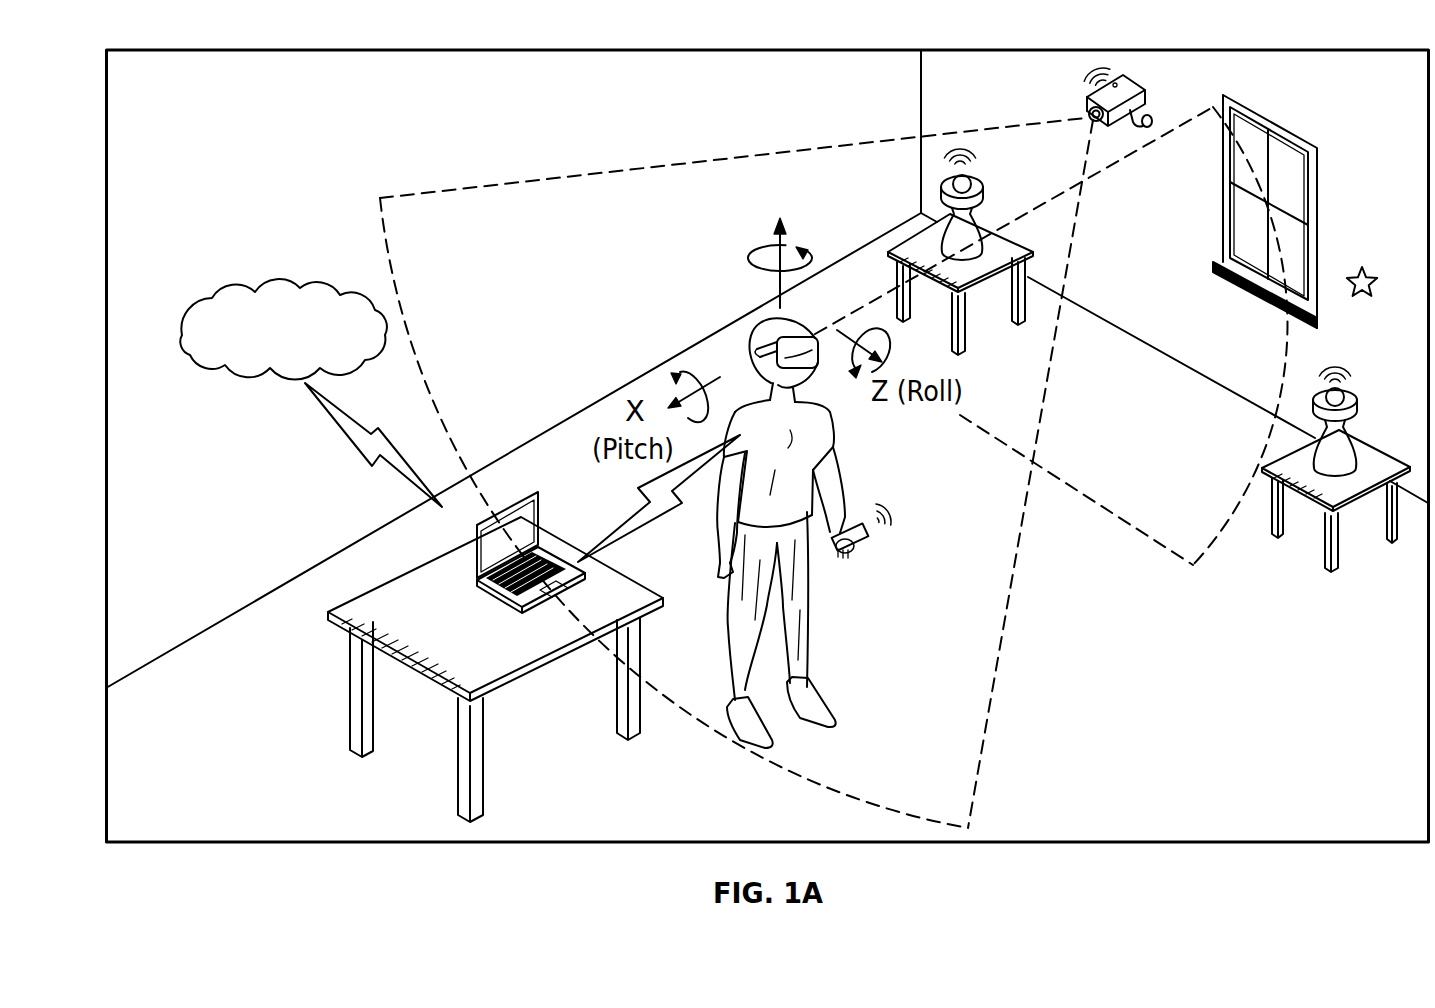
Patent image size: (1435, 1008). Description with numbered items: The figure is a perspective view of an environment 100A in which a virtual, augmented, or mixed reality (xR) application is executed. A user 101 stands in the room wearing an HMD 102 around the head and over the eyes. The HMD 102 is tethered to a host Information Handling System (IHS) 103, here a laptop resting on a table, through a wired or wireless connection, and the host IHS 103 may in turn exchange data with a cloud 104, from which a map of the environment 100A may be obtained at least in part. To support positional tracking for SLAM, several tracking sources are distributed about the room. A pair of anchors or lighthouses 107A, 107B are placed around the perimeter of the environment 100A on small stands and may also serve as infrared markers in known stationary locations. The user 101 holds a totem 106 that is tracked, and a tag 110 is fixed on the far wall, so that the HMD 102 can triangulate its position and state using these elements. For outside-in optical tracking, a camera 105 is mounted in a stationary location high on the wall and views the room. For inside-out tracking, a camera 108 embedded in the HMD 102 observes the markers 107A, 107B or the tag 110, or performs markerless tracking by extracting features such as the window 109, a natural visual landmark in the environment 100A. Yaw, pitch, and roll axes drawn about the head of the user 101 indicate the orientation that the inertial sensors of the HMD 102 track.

The environment 100A is at (195, 49).
The user 101 is at (808, 607).
The HMD 102 is at (813, 367).
The host Information Handling System (IHS) 103 is at (477, 548).
The cloud 104 is at (205, 298).
The camera 105 is at (1147, 92).
The totem 106 is at (858, 530).
The anchor or lighthouse 107A is at (983, 190).
The anchor or lighthouse 107B is at (1358, 405).
The camera 108 is at (795, 328).
The window 109 is at (1317, 175).
The tag 110 is at (1370, 274).